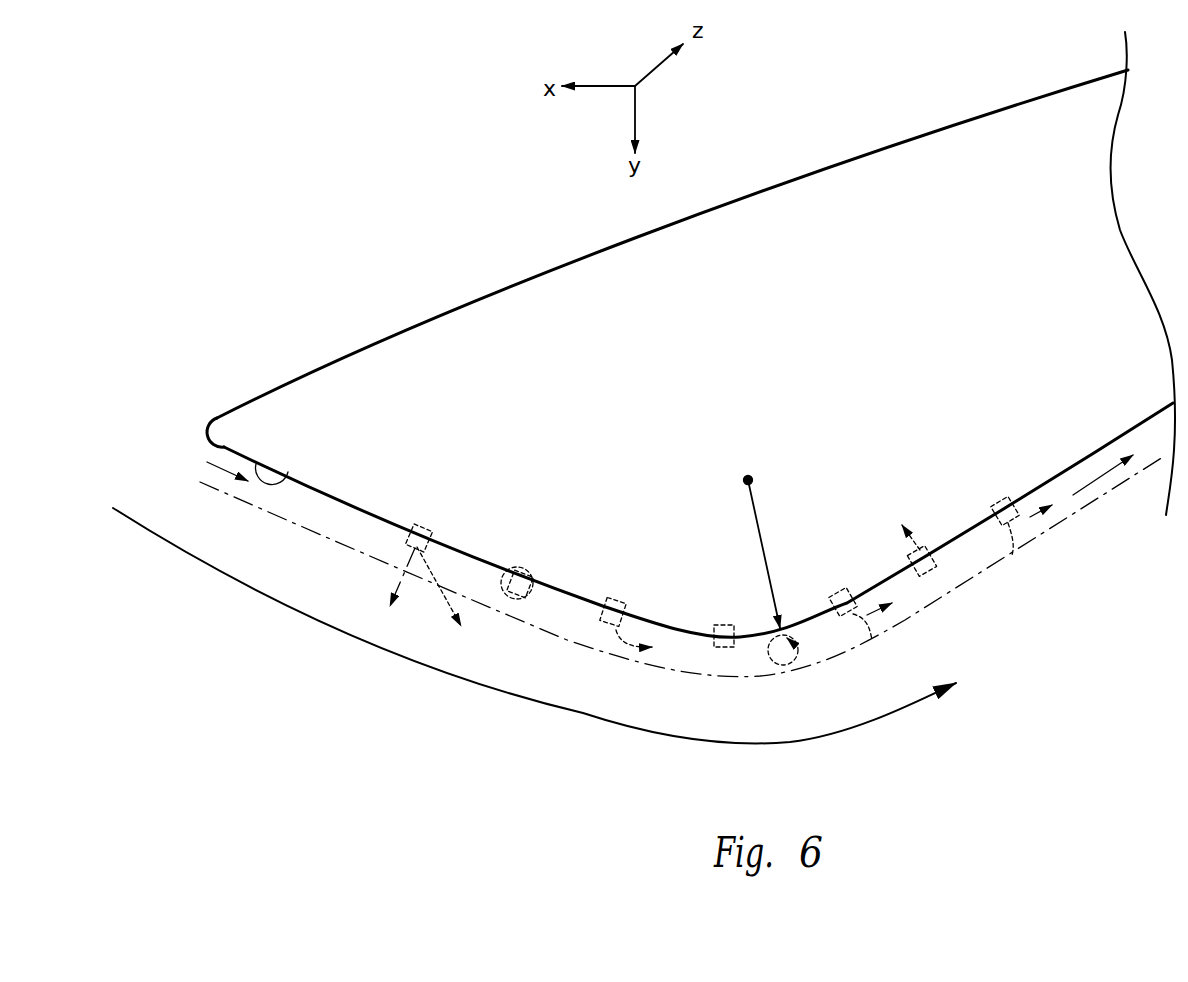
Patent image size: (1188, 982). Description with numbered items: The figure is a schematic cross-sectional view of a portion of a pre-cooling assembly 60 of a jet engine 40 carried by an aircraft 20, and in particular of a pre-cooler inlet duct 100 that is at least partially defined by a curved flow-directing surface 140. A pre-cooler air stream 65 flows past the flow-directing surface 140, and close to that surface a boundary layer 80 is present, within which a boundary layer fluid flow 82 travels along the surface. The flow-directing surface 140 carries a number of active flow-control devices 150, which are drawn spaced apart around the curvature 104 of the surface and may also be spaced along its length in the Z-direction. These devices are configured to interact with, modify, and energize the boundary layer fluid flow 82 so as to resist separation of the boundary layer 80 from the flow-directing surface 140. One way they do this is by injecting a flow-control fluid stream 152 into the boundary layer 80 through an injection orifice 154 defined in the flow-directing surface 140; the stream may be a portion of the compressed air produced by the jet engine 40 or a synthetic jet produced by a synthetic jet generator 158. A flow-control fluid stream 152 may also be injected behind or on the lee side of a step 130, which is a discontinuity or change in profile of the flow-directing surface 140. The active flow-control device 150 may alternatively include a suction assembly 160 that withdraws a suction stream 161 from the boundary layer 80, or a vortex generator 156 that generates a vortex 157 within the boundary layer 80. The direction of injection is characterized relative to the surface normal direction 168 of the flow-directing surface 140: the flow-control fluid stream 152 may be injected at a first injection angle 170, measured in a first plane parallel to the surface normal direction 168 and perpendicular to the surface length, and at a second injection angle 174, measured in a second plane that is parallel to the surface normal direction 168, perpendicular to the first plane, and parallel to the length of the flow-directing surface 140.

The aircraft 20 is at (254, 150).
The jet engine 40 is at (249, 189).
The pre-cooling assembly 60 is at (246, 220).
The pre-cooler air stream 65 is at (492, 698).
The boundary layer 80 is at (1073, 558).
The boundary layer fluid flow 82 is at (215, 485).
The pre-cooler inlet duct 100 is at (693, 776).
The curvature 104 is at (757, 510).
The step 130 is at (503, 568).
The flow-directing surface 140 is at (288, 468).
The active flow-control device 150 is at (409, 521).
The flow-control fluid stream 152 is at (455, 612).
The injection orifice 154 is at (622, 597).
The vortex generator 156 is at (735, 624).
The vortex 157 is at (776, 665).
The synthetic jet generator 158 is at (630, 612).
The suction assembly 160 is at (918, 540).
The suction stream 161 is at (925, 548).
The surface normal direction 168 is at (422, 568).
The first injection angle 170 is at (433, 580).
The second injection angle 174 is at (403, 565).